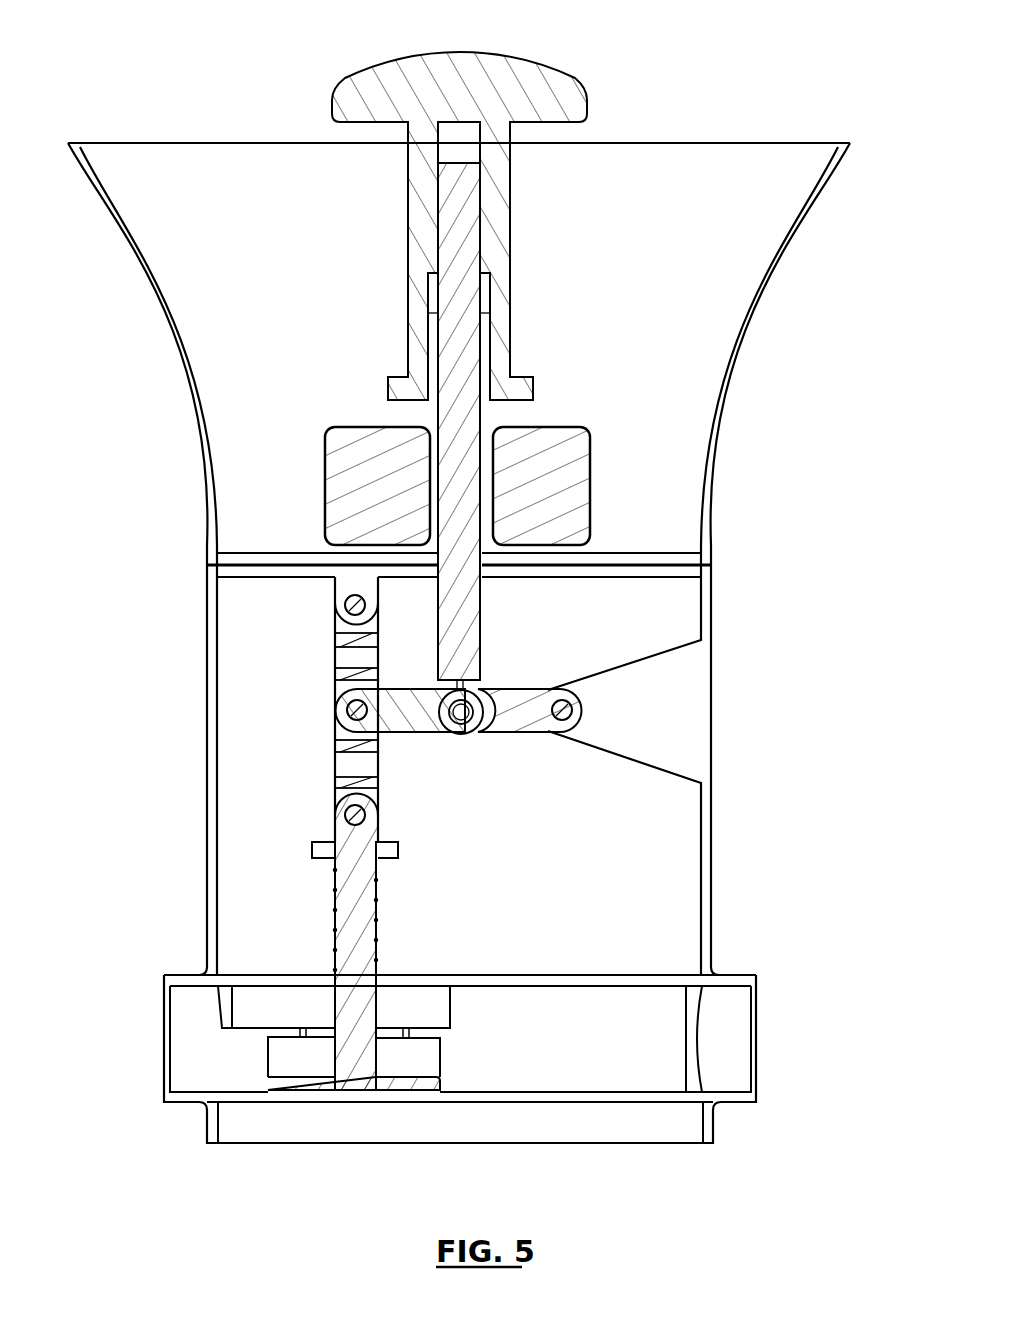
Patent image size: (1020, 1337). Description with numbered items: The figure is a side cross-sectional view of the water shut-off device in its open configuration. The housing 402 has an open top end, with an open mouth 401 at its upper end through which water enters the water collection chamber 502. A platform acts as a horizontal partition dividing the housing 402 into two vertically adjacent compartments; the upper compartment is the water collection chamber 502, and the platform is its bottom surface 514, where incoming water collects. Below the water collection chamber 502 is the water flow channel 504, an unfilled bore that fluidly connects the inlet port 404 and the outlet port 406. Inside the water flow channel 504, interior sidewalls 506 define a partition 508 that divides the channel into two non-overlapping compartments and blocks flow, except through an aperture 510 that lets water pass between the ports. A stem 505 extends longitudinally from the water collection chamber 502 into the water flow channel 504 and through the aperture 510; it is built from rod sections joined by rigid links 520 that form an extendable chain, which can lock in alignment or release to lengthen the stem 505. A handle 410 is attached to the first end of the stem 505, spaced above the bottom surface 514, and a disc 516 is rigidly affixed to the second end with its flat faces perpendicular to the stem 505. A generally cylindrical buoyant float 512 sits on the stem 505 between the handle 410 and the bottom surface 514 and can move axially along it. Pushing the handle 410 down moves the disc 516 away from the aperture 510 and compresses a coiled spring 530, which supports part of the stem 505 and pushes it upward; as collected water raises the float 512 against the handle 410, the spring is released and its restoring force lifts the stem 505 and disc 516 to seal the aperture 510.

The open mouth 401 is at (711, 143).
The housing 402 is at (208, 535).
The inlet port 404 is at (176, 1077).
The outlet port 406 is at (735, 970).
The handle 410 is at (528, 72).
The water collection chamber 502 is at (213, 363).
The water flow channel 504 is at (690, 1080).
The stem 505 is at (455, 383).
The interior sidewalls 506 is at (275, 1080).
The partition 508 is at (442, 1040).
The aperture 510 is at (303, 1037).
The float 512 is at (565, 515).
The bottom surface 514 is at (660, 580).
The disc 516 is at (415, 1080).
The links 520 is at (330, 770).
The coiled spring 530 is at (360, 920).